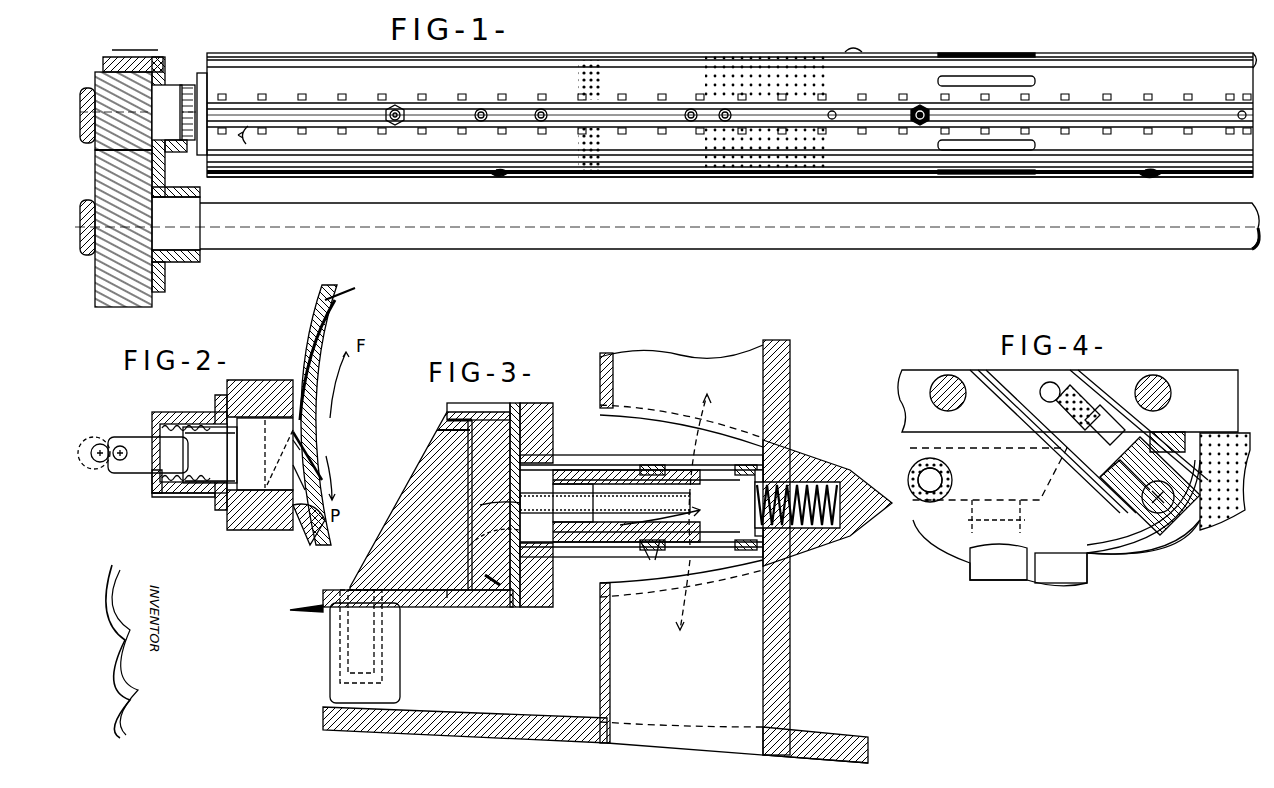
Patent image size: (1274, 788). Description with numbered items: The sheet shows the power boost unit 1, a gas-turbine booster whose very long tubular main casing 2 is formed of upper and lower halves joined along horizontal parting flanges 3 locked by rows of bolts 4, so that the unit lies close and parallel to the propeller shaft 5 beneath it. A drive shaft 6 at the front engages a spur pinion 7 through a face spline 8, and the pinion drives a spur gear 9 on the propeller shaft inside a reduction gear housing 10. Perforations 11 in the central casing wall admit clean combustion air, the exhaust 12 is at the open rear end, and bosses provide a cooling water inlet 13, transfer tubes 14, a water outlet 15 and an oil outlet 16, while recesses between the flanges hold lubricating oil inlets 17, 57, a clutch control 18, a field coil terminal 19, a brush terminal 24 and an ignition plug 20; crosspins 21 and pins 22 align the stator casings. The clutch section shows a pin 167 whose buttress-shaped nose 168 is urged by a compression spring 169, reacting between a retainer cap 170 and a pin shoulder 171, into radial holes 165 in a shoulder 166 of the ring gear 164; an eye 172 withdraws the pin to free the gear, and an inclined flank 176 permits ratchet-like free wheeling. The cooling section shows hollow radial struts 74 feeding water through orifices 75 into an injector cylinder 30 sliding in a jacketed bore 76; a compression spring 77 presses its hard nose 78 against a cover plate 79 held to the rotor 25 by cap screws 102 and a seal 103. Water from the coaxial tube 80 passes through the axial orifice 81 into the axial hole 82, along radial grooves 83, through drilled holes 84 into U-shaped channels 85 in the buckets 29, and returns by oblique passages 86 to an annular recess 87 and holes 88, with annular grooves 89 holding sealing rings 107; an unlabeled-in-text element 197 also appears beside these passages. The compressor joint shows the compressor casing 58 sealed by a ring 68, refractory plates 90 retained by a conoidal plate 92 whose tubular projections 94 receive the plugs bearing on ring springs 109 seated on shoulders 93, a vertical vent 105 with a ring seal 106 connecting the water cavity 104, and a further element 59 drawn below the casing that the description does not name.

In FIG. 1, the power boost unit 1 is at (665, 55).
In FIG. 1, the main casing 2 is at (312, 174).
In FIG. 2, the main casing 2 is at (322, 298).
In FIG. 1, the parting flanges 3 is at (243, 136).
In FIG. 2, the parting flanges 3 is at (227, 386).
In FIG. 4, the parting flanges 3 is at (1238, 380).
In FIG. 1, the bolts 4 is at (344, 97).
In FIG. 4, the bolts 4 is at (945, 375).
In FIG. 1, the propeller shaft 5 is at (575, 242).
In FIG. 1, the drive shaft 6 is at (190, 148).
In FIG. 1, the spur pinion 7 is at (120, 57).
In FIG. 1, the face spline 8 is at (184, 85).
In FIG. 1, the spur gear 9 is at (152, 304).
In FIG. 1, the reduction gear housing 10 is at (196, 260).
In FIG. 1, the perforations 11 is at (712, 174).
In FIG. 1, the exhaust 12 is at (1257, 58).
In FIG. 1, the cooling water inlet 13 is at (1158, 176).
In FIG. 1, the cooling water transfer tubes 14 is at (1032, 80).
In FIG. 1, the cooling water outlet 15 is at (862, 52).
In FIG. 1, the lubricating oil outlet 16 is at (510, 175).
In FIG. 1, the lubricating oil inlet 17 is at (541, 108).
In FIG. 1, the clutch control 18 is at (395, 105).
In FIG. 2, the clutch control 18 is at (182, 412).
In FIG. 1, the field coil terminal 19 is at (685, 118).
In FIG. 1, the ignition plug 20 is at (921, 106).
In FIG. 4, the ignition plug 20 is at (1042, 388).
In FIG. 1, the crosspins 21 is at (1238, 113).
In FIG. 1, the pins 22 is at (833, 110).
In FIG. 1, the terminal 24 is at (722, 108).
In FIG. 3, the rotor 25 is at (425, 492).
In FIG. 3, the bucket 29 is at (395, 690).
In FIG. 3, the injector cylinder 30 is at (606, 460).
In FIG. 1, the lubricating oil inlet 57 is at (483, 108).
In FIG. 4, the compressor stator casing 58 is at (1015, 517).
In FIG. 4, the cap 59 is at (968, 572).
In FIG. 4, the silicon-rubber ring 68 is at (1175, 440).
In FIG. 3, the radial struts 74 is at (790, 372).
In FIG. 3, the orifices 75 is at (690, 457).
In FIG. 3, the jacketed cylinder bore 76 is at (790, 452).
In FIG. 3, the compression spring 77 is at (825, 472).
In FIG. 3, the hard nose 78 is at (565, 557).
In FIG. 3, the cover plate 79 is at (515, 596).
In FIG. 3, the tube 80 is at (605, 506).
In FIG. 3, the axial orifice 81 is at (573, 503).
In FIG. 3, the axial hole 82 is at (520, 503).
In FIG. 3, the radial grooves 83 is at (440, 472).
In FIG. 3, the drilled holes 84 is at (447, 418).
In FIG. 3, the U-shaped channels 85 is at (382, 656).
In FIG. 3, the oblique passages 86 is at (470, 545).
In FIG. 3, the annular recess 87 is at (548, 436).
In FIG. 3, the holes 88 is at (553, 448).
In FIG. 3, the annular grooves 89 is at (640, 555).
In FIG. 4, the refractory plates 90 is at (1222, 500).
In FIG. 4, the conoidal plate 92 is at (1143, 507).
In FIG. 4, the shoulders 93 is at (1105, 495).
In FIG. 4, the tubular projections 94 is at (1120, 515).
In FIG. 3, the cap screws 102 is at (447, 607).
In FIG. 3, the silicon-rubber seal 103 is at (490, 607).
In FIG. 4, the cavity 104 is at (1015, 448).
In FIG. 4, the vertical vent 105 is at (910, 478).
In FIG. 4, the ring seal 106 is at (953, 476).
In FIG. 4, the sealing rings 107 is at (1025, 420).
In FIG. 4, the springs 109 is at (1170, 395).
In FIG. 2, the ring gear 164 is at (293, 528).
In FIG. 2, the radial holes 165 is at (312, 470).
In FIG. 2, the shoulder 166 is at (352, 305).
In FIG. 2, the pin 167 is at (210, 455).
In FIG. 2, the nose 168 is at (293, 430).
In FIG. 2, the compression spring 169 is at (158, 497).
In FIG. 2, the retainer cap 170 is at (154, 488).
In FIG. 2, the shoulder 171 is at (186, 455).
In FIG. 2, the eye 172 is at (104, 464).
In FIG. 2, the inclined flank 176 is at (308, 450).
In FIG. 3, the port 197 is at (660, 552).